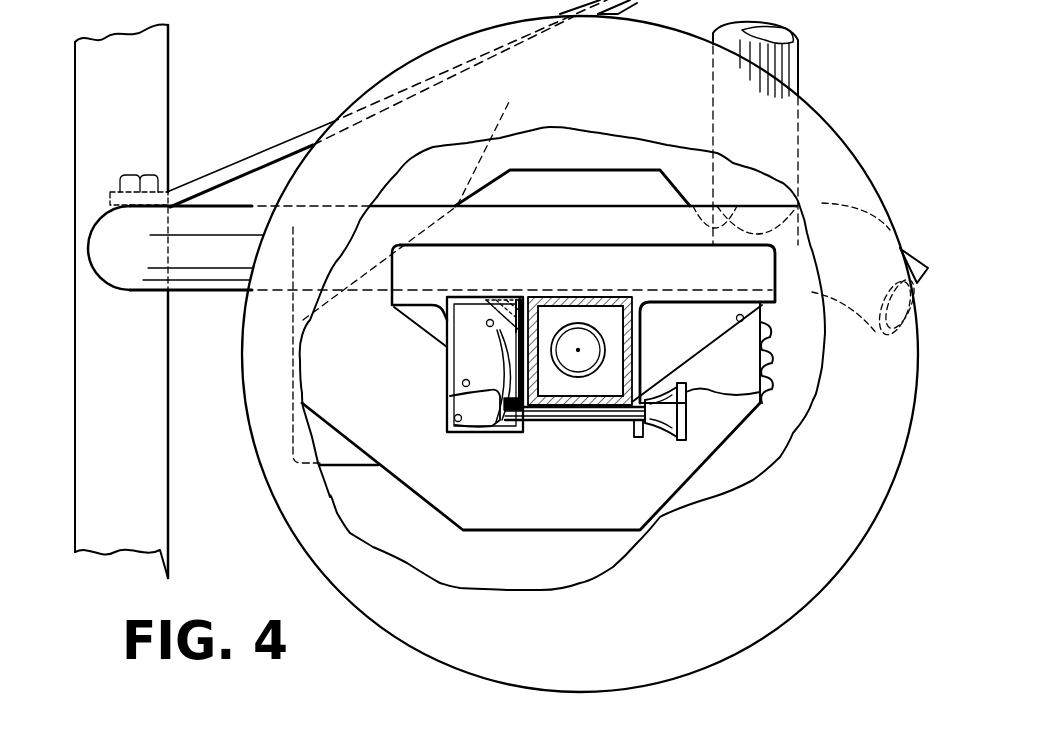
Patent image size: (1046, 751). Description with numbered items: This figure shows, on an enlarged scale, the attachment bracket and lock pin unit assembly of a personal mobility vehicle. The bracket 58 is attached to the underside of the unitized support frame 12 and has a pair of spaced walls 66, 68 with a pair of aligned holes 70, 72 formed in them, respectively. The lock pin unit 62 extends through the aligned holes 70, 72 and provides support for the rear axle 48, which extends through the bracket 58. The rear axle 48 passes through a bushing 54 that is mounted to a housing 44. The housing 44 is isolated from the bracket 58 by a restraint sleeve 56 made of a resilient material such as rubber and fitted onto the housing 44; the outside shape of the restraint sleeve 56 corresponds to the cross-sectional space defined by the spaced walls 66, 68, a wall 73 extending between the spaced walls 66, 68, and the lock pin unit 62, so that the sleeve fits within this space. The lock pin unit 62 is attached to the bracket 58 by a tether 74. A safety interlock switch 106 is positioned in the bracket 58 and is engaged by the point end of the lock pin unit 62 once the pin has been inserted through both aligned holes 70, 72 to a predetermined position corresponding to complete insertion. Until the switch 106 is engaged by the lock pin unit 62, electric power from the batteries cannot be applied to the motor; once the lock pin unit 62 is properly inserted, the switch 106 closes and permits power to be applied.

The unitized support frame 12 is at (223, 293).
The housing 44 is at (640, 312).
The rear axle 48 is at (575, 372).
The bushing 54 is at (620, 333).
The restraint sleeve 56 is at (545, 297).
The bracket 58 is at (707, 348).
The lock pin unit 62 is at (666, 430).
The spaced wall 66 is at (642, 360).
The spaced wall 68 is at (520, 300).
The aligned hole 70 is at (637, 430).
The aligned hole 72 is at (523, 432).
The wall 73 is at (600, 293).
The tether 74 is at (758, 400).
The safety interlock switch 106 is at (450, 396).